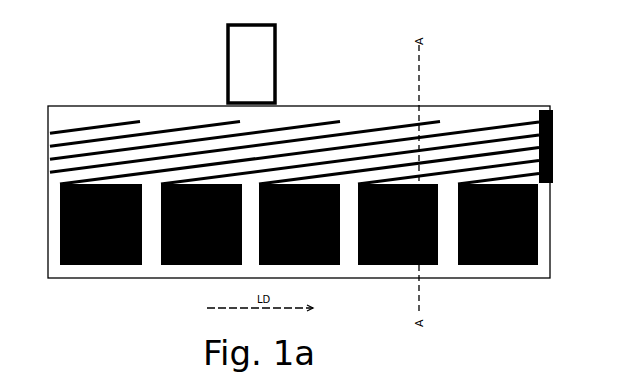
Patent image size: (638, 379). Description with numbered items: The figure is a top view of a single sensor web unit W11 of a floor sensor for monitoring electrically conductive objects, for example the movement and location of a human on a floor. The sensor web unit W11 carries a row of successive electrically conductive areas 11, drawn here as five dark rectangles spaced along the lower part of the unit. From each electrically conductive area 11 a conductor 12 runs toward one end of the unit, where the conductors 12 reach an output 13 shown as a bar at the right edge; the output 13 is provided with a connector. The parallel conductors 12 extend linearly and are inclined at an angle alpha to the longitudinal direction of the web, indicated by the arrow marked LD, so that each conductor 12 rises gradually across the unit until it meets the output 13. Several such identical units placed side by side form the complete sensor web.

The electrically conductive area 11 is at (92, 265).
The conductor 12 is at (83, 128).
The output 13 is at (546, 110).
The sensor web unit W11 is at (298, 130).